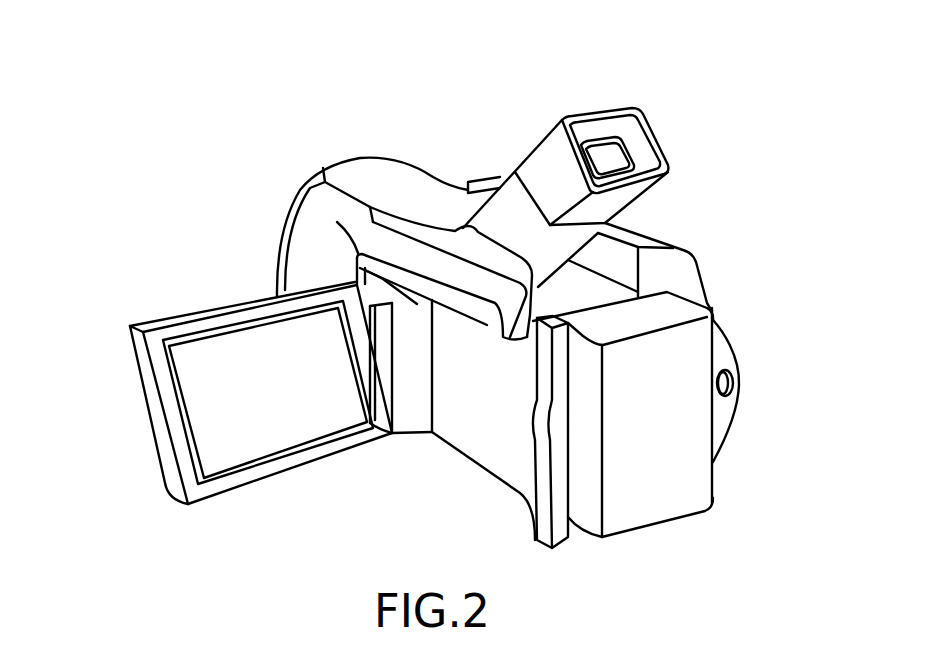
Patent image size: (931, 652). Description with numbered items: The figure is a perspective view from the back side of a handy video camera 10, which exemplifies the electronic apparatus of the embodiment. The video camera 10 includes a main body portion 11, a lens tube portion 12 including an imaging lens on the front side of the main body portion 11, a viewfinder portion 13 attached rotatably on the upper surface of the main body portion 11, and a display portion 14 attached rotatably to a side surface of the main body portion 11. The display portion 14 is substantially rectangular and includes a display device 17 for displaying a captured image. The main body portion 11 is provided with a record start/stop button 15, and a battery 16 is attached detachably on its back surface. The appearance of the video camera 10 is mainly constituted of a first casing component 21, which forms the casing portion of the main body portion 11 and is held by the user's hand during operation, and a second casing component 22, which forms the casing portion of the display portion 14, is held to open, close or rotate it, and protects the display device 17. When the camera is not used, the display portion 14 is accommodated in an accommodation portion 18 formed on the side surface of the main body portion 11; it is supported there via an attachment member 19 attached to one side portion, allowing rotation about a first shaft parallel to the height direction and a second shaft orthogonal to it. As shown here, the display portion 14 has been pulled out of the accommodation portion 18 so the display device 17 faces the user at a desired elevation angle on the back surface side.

The video camera 10 is at (262, 89).
The main body portion 11 is at (449, 198).
The lens tube portion 12 is at (371, 152).
The viewfinder portion 13 is at (629, 97).
The display portion 14 is at (298, 474).
The record start/stop button 15 is at (723, 374).
The battery 16 is at (680, 480).
The display device 17 is at (253, 343).
The accommodation portion 18 is at (498, 448).
The attachment member 19 is at (397, 390).
The first casing component 21 is at (373, 247).
The second casing component 22 is at (131, 325).